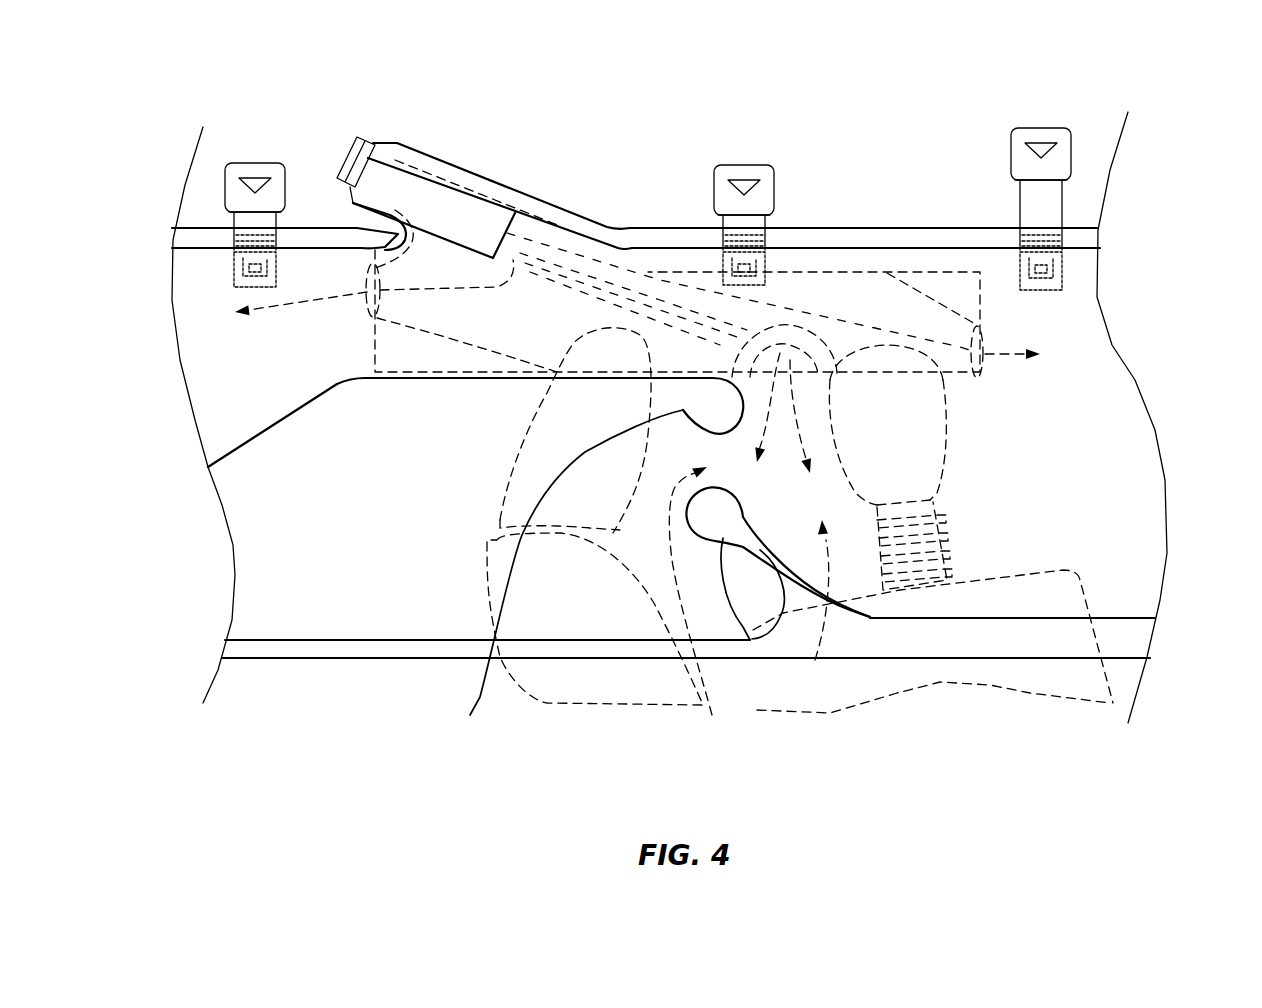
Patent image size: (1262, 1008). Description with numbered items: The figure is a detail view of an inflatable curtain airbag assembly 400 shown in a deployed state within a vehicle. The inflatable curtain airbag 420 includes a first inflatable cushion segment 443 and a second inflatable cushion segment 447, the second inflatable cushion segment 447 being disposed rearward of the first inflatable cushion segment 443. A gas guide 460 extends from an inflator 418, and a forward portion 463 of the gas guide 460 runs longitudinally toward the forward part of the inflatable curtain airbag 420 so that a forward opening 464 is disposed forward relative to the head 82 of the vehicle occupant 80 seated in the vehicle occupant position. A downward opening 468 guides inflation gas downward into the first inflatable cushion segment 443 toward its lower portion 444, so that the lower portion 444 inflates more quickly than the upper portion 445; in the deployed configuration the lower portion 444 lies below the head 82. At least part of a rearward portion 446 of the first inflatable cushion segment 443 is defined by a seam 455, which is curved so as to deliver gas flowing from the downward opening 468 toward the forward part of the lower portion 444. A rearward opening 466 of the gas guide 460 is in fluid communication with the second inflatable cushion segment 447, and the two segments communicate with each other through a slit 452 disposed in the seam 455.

The inflatable curtain airbag assembly 400 is at (978, 100).
The inflator 418 is at (483, 215).
The gas guide 460 is at (622, 252).
The downward opening 468 is at (827, 380).
The forward portion 463 is at (967, 300).
The upper portion 445 is at (1047, 315).
The forward opening 464 is at (987, 330).
The rearward opening 466 is at (352, 322).
The inflatable curtain airbag 420 is at (1087, 440).
The first inflatable cushion segment 443 is at (1100, 543).
The lower portion 444 is at (1137, 596).
The second inflatable cushion segment 447 is at (285, 595).
The seam 455 is at (487, 640).
The slit 452 is at (703, 705).
The rearward portion 446 is at (815, 660).
The vehicle occupant 80 is at (993, 672).
The head 82 is at (902, 423).